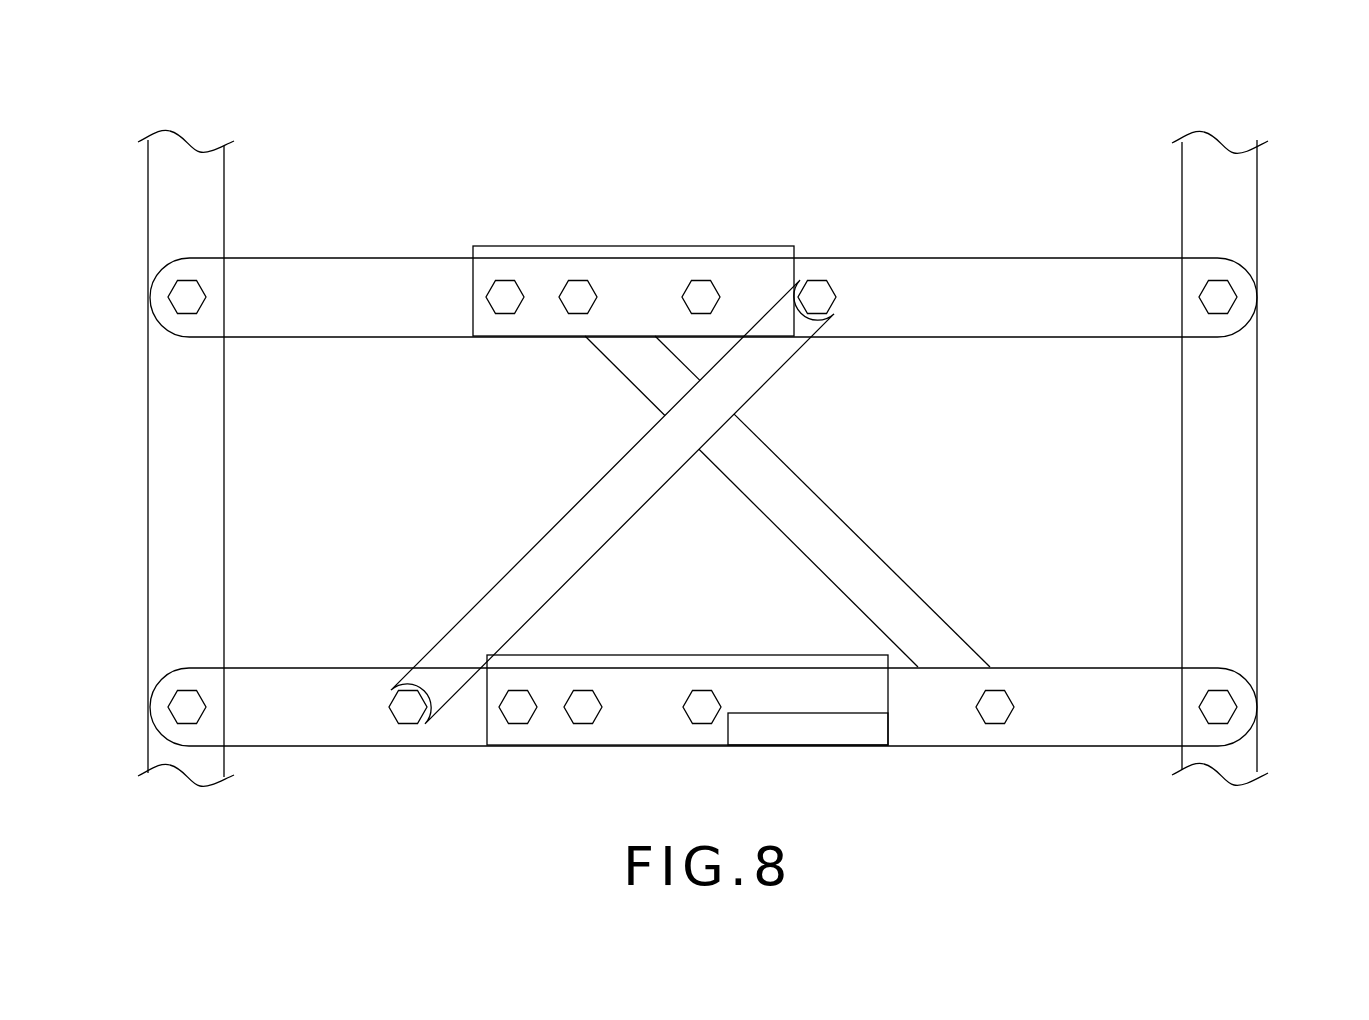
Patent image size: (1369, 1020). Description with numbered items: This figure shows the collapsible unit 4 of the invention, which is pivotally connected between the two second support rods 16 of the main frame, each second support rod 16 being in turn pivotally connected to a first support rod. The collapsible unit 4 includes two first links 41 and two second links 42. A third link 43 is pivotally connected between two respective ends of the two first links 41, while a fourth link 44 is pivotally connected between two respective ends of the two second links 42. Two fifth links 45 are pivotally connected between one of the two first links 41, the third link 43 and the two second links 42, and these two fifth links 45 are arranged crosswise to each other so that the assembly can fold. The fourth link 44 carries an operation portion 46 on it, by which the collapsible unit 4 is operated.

The collapsible unit 4 is at (703, 395).
The second support rod 16 is at (172, 513).
The first link 41 is at (438, 282).
The second link 42 is at (296, 695).
The third link 43 is at (750, 256).
The fourth link 44 is at (750, 672).
The fifth link 45 is at (585, 525).
The operation portion 46 is at (845, 720).